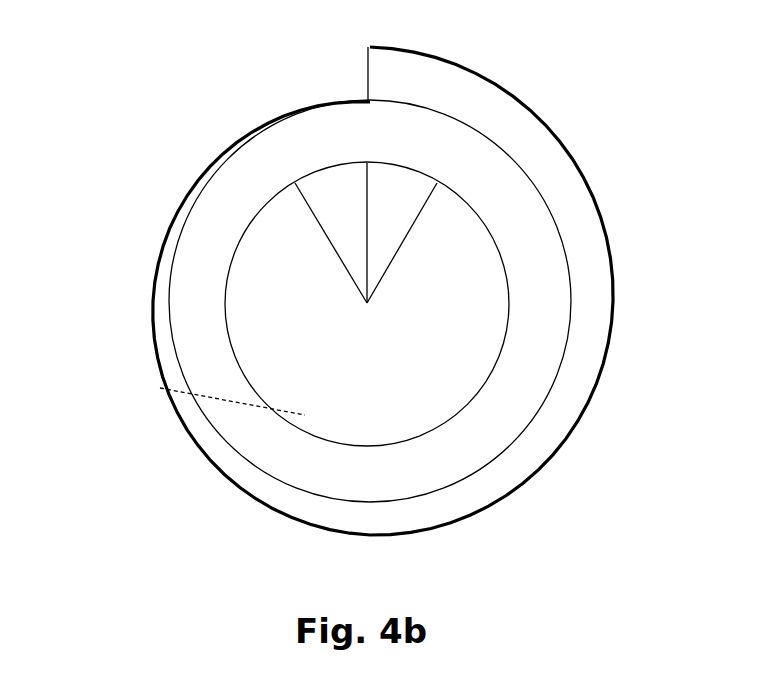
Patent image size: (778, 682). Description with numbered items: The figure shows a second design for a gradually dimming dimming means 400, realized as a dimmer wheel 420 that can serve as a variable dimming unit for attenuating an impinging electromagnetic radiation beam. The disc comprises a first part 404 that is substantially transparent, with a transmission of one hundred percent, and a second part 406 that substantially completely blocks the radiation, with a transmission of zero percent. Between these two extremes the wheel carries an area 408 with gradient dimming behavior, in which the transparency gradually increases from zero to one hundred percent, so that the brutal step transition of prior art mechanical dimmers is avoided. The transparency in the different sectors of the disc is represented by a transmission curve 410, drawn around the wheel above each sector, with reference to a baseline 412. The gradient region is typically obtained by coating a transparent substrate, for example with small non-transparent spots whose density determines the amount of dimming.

The dimming means 400 is at (148, 117).
The first part 404 is at (407, 175).
The second part 406 is at (360, 212).
The area with gradient dimming behavior 408 is at (377, 375).
The transmission curve 410 is at (615, 250).
The baseline 412 is at (575, 300).
The dimmer wheel 420 is at (228, 258).